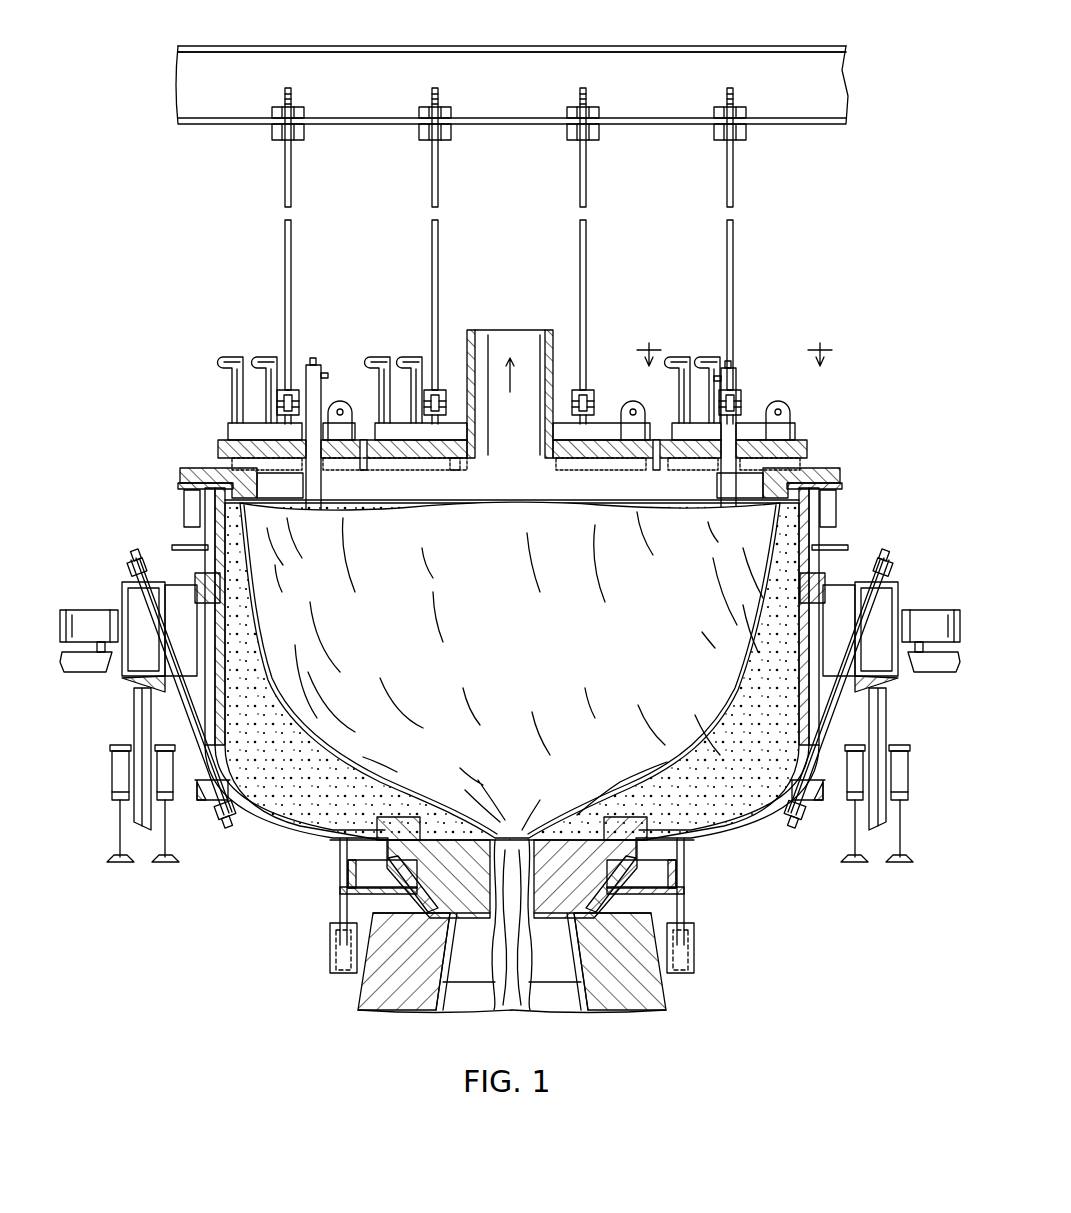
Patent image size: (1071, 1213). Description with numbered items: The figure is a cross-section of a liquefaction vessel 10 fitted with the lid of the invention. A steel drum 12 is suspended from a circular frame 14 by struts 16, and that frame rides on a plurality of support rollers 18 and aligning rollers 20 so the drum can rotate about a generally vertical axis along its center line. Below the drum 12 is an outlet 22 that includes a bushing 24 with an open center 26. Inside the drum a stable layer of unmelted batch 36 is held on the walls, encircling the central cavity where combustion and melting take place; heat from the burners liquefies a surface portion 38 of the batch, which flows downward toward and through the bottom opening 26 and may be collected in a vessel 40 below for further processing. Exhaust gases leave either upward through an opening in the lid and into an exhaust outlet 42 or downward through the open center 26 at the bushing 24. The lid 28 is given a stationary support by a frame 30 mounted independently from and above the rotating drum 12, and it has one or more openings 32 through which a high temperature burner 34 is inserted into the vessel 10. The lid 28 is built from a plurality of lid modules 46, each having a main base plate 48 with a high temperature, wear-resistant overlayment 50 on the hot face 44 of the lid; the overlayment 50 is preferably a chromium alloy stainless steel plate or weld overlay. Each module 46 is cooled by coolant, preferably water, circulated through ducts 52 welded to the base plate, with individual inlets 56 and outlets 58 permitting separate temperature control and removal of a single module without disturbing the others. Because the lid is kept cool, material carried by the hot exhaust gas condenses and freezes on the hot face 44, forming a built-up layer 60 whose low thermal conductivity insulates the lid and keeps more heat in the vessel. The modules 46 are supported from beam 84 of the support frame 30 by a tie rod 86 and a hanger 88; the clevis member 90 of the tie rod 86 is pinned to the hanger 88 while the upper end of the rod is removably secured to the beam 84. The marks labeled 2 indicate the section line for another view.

The liquefaction vessel 10 is at (257, 913).
The steel drum 12 is at (660, 838).
The circular frame 14 is at (125, 582).
The struts 16 is at (190, 710).
The support rollers 18 is at (134, 716).
The aligning rollers 20 is at (118, 610).
The outlet 22 is at (603, 897).
The bushing 24 is at (485, 935).
The open center 26 is at (517, 798).
The lid 28 is at (811, 462).
The frame 30 is at (846, 56).
The openings 32 is at (736, 470).
The high temperature burner 34 is at (322, 344).
The unmelted batch 36 is at (296, 760).
The surface portion 38 is at (412, 785).
The vessel 40 is at (358, 985).
The exhaust outlet 42 is at (556, 332).
The hot face 44 is at (388, 471).
The lid modules 46 is at (218, 449).
The main base plate 48 is at (600, 471).
The overlayment 50 is at (678, 471).
The ducts 52 is at (796, 433).
The inlets 56 is at (264, 357).
The outlets 58 is at (222, 360).
The built-up layer 60 is at (462, 470).
The beam 84 is at (376, 46).
The tie rod 86 is at (440, 185).
The hanger 88 is at (590, 420).
The clevis member 90 is at (590, 390).
The section line 2 is at (734, 368).